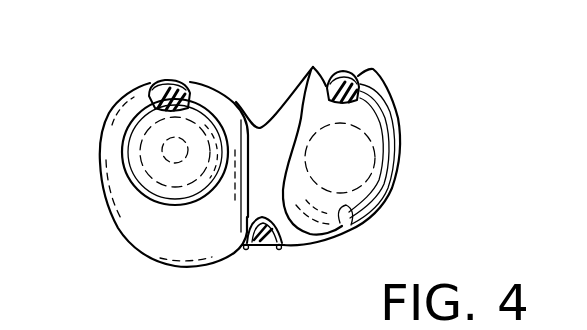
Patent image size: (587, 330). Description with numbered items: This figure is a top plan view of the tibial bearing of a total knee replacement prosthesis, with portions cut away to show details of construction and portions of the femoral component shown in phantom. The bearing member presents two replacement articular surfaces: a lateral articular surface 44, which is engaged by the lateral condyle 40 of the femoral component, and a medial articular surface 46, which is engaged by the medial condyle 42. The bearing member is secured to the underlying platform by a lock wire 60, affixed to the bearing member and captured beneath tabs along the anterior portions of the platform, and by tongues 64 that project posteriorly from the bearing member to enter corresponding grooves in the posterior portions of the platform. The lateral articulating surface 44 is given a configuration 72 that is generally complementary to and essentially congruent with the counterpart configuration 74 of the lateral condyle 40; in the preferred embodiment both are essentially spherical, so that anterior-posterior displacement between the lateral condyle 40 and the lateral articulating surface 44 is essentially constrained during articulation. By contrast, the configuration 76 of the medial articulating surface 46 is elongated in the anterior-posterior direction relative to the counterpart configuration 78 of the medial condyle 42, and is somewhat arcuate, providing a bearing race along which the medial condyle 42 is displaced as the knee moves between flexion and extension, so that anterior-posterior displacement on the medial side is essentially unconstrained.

The lateral condyle 40 is at (150, 198).
The medial condyle 42 is at (380, 152).
The lateral articular surface 44 is at (152, 149).
The medial articular surface 46 is at (352, 178).
The lock wire 60 is at (264, 248).
The tongues 64 is at (172, 80).
The configuration of the lateral articulating surface 72 is at (148, 198).
The counterpart configuration of the lateral condyle 74 is at (122, 126).
The configuration of the medial articulating surface 76 is at (350, 226).
The counterpart configuration of the medial condyle 78 is at (365, 130).